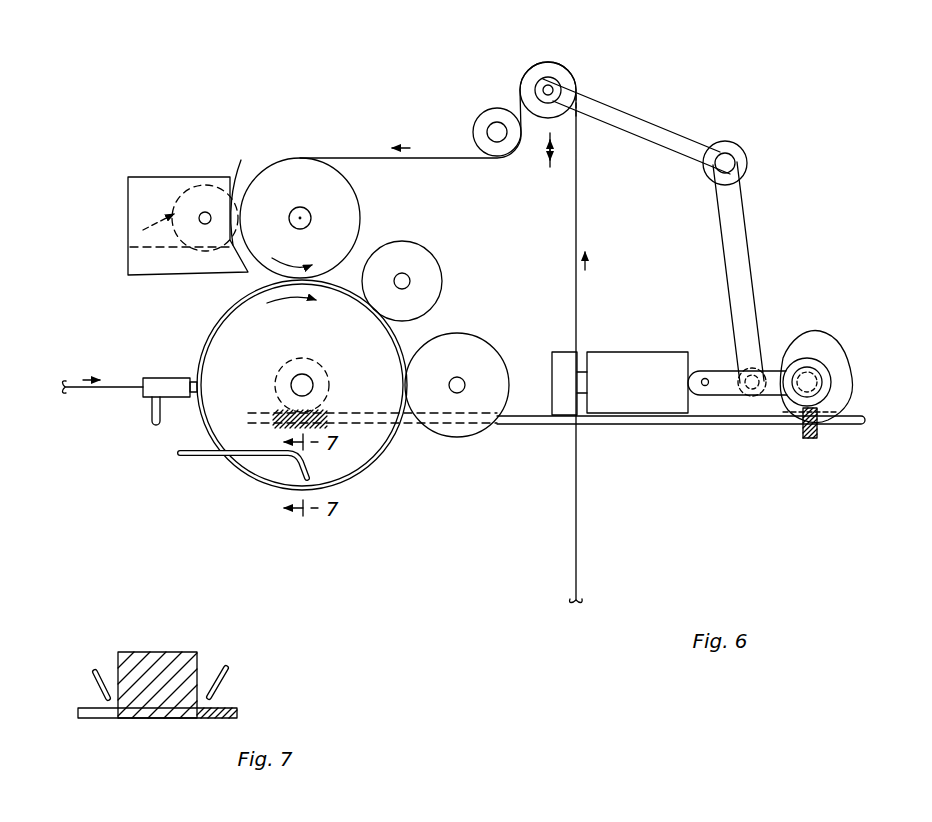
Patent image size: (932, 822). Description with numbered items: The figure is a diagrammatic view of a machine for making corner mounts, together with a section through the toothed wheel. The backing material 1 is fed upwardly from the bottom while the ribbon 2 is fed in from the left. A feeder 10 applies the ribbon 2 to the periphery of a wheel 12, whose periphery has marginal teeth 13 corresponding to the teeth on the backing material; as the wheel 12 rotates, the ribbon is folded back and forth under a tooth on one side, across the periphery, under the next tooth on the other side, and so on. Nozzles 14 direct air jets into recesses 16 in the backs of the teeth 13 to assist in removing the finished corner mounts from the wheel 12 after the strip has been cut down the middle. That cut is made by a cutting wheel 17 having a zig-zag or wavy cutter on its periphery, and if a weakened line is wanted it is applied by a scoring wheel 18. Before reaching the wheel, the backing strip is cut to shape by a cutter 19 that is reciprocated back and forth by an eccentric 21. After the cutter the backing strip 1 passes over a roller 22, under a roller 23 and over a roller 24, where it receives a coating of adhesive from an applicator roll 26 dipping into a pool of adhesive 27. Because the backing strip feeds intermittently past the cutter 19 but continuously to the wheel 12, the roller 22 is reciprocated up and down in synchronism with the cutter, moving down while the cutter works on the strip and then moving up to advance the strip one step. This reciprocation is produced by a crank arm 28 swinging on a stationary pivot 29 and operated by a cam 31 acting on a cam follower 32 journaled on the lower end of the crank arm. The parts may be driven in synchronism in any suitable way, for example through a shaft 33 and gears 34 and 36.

In FIG. 6, the backing material 1 is at (580, 511).
In FIG. 6, the ribbon 2 is at (110, 392).
In FIG. 6, the feeder 10 is at (164, 378).
In FIG. 6, the wheel 12 is at (240, 322).
In FIG. 7, the wheel 12 is at (153, 655).
In FIG. 6, the marginal teeth 13 is at (386, 461).
In FIG. 7, the marginal teeth 13 is at (237, 709).
In FIG. 6, the nozzles 14 is at (222, 460).
In FIG. 7, the nozzles 14 is at (217, 676).
In FIG. 7, the recesses 16 is at (160, 712).
In FIG. 6, the cutting wheel 17 is at (488, 358).
In FIG. 6, the scoring wheel 18 is at (413, 252).
In FIG. 6, the cutter 19 is at (640, 360).
In FIG. 6, the eccentric 21 is at (793, 366).
In FIG. 6, the roller 22 is at (545, 72).
In FIG. 6, the roller 23 is at (485, 120).
In FIG. 6, the roller 24 is at (298, 163).
In FIG. 6, the applicator roll 26 is at (240, 200).
In FIG. 6, the pool of adhesive 27 is at (138, 238).
In FIG. 6, the crank arm 28 is at (648, 123).
In FIG. 6, the stationary pivot 29 is at (728, 157).
In FIG. 6, the cam 31 is at (835, 345).
In FIG. 6, the cam follower 32 is at (750, 400).
In FIG. 6, the shaft 33 is at (855, 418).
In FIG. 6, the gear 34 is at (805, 437).
In FIG. 6, the gear 36 is at (335, 405).